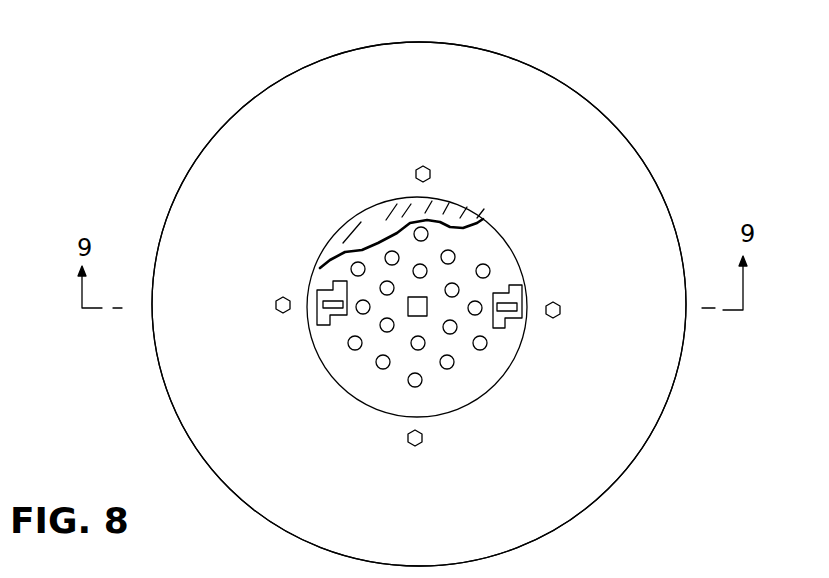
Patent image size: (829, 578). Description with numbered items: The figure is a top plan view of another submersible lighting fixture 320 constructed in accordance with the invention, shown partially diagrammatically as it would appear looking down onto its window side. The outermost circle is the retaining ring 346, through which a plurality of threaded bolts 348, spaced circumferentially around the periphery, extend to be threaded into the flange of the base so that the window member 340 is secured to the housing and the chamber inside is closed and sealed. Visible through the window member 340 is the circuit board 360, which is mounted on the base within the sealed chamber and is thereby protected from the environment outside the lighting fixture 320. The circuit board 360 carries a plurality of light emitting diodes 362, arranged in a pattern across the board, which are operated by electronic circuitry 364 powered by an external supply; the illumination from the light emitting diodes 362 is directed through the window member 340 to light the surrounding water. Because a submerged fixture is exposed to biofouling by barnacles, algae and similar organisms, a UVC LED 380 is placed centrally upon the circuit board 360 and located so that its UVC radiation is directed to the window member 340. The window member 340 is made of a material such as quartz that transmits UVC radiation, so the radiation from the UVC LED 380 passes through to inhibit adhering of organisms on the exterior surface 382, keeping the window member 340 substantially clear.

The submersible lighting fixture 320 is at (382, 43).
The retaining ring 346 is at (598, 152).
The circuit board 360 is at (463, 392).
The threaded bolts 348 is at (429, 168).
The exterior surface 382 is at (457, 221).
The window member 340 is at (378, 224).
The UVC LED 380 is at (427, 298).
The electronic circuitry 364 is at (512, 300).
The light emitting diodes 362 is at (415, 380).